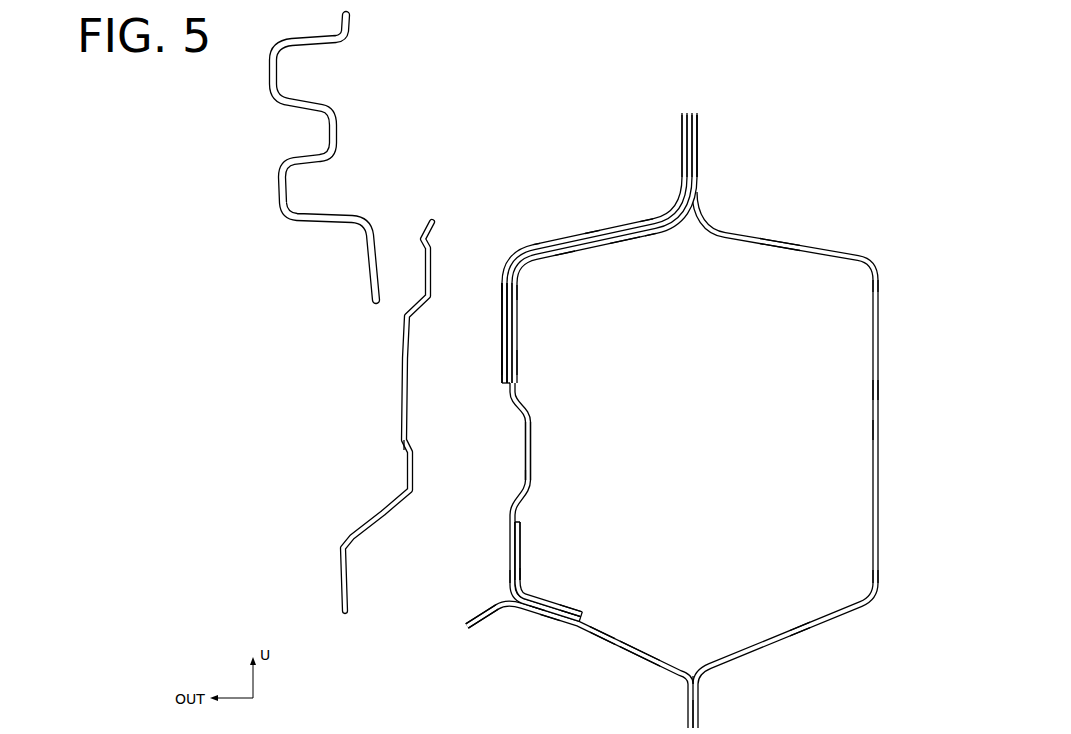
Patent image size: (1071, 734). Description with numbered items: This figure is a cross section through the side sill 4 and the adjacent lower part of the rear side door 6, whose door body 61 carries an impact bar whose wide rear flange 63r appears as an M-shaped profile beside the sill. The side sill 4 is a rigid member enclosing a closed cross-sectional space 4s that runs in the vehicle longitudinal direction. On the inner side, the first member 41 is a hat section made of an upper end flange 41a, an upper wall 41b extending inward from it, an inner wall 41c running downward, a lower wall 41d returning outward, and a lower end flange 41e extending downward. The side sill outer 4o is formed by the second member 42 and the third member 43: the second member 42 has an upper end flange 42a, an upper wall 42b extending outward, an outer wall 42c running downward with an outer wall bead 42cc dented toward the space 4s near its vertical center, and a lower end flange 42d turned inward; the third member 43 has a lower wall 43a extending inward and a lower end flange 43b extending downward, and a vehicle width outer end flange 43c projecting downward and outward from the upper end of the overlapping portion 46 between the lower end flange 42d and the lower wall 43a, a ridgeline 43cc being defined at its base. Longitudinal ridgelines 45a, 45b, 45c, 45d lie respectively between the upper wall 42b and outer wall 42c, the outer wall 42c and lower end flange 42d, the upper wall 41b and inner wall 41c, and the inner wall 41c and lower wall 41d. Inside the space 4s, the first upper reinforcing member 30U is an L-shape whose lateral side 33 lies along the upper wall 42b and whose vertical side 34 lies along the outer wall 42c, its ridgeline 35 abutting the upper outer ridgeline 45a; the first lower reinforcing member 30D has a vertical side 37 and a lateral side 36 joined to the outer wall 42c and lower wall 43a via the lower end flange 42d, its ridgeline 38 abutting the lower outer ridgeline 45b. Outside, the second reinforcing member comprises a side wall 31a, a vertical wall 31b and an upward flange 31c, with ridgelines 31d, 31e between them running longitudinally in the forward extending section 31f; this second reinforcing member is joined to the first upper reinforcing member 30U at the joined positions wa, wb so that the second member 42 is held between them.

The side sill 4 is at (611, 168).
The side sill outer 4o is at (515, 491).
The closed cross-sectional space 4s is at (766, 439).
The rear side door 6 is at (430, 145).
The first upper reinforcing member 30U is at (546, 272).
The first lower reinforcing member 30D is at (553, 597).
The side wall 31a is at (501, 330).
The vertical wall 31b is at (597, 228).
The flange 31c is at (680, 150).
The ridgeline 31d is at (501, 262).
The ridgeline 31e is at (667, 207).
The forward extending section 31f is at (547, 237).
The lateral side 33 is at (563, 257).
The vertical side 34 is at (519, 333).
The ridgeline 35 is at (522, 273).
The lateral side 36 is at (568, 607).
The vertical side 37 is at (521, 540).
The ridgeline 38 is at (521, 588).
The first member 41 is at (884, 428).
The upper end flange 41a is at (698, 140).
The upper wall 41b is at (780, 235).
The inner wall 41c is at (880, 390).
The lower wall 41d is at (800, 633).
The lower end flange 41e is at (700, 706).
The second member 42 is at (667, 243).
The upper end flange 42a is at (682, 138).
The upper wall 42b is at (630, 243).
The outer wall 42c is at (507, 540).
The outer wall bead 42cc is at (556, 438).
The lower end flange 42d is at (532, 612).
The third member 43 is at (605, 645).
The lower wall 43a is at (628, 640).
The lower end flange 43b is at (688, 703).
The vehicle width outer end flange 43c is at (478, 614).
The ridgeline 43cc is at (507, 596).
The upper outer ridgeline 45a is at (507, 255).
The lower outer ridgeline 45b is at (509, 592).
The ridgeline 45c is at (873, 270).
The ridgeline 45d is at (877, 597).
The overlapping portion 46 is at (545, 630).
The door body 61 is at (400, 413).
The rear flange 63r is at (277, 190).
The joined position wa is at (501, 300).
The joined position wb is at (501, 375).